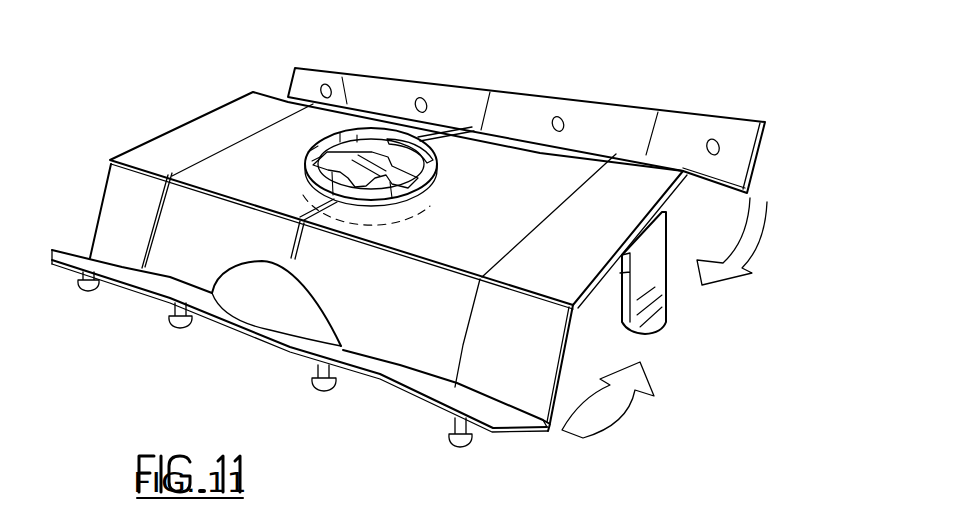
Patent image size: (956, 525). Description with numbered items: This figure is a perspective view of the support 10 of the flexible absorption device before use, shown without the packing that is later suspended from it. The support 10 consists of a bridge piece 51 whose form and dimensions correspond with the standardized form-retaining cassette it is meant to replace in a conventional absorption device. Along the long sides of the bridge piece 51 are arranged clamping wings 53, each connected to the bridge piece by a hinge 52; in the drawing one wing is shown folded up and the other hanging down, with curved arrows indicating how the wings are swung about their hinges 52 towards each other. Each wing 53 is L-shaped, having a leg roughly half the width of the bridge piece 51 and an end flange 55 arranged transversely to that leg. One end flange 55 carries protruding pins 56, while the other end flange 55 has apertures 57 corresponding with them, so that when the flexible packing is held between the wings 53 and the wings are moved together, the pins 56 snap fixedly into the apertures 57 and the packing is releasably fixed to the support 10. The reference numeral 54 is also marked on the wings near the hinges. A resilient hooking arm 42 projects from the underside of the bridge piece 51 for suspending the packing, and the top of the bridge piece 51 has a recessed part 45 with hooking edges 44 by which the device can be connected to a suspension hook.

The support 10 is at (187, 121).
The resilient hooking arms 42 is at (657, 315).
The hooking edges 44 is at (330, 137).
The recessed part 45 is at (369, 138).
The bridge piece 51 is at (237, 128).
The hinges 52 is at (683, 190).
The clamping wings 53 is at (761, 160).
The fold line 54 is at (714, 188).
The end flange 55 is at (765, 123).
The protruding pins 56 is at (90, 291).
The apertures 57 is at (330, 84).